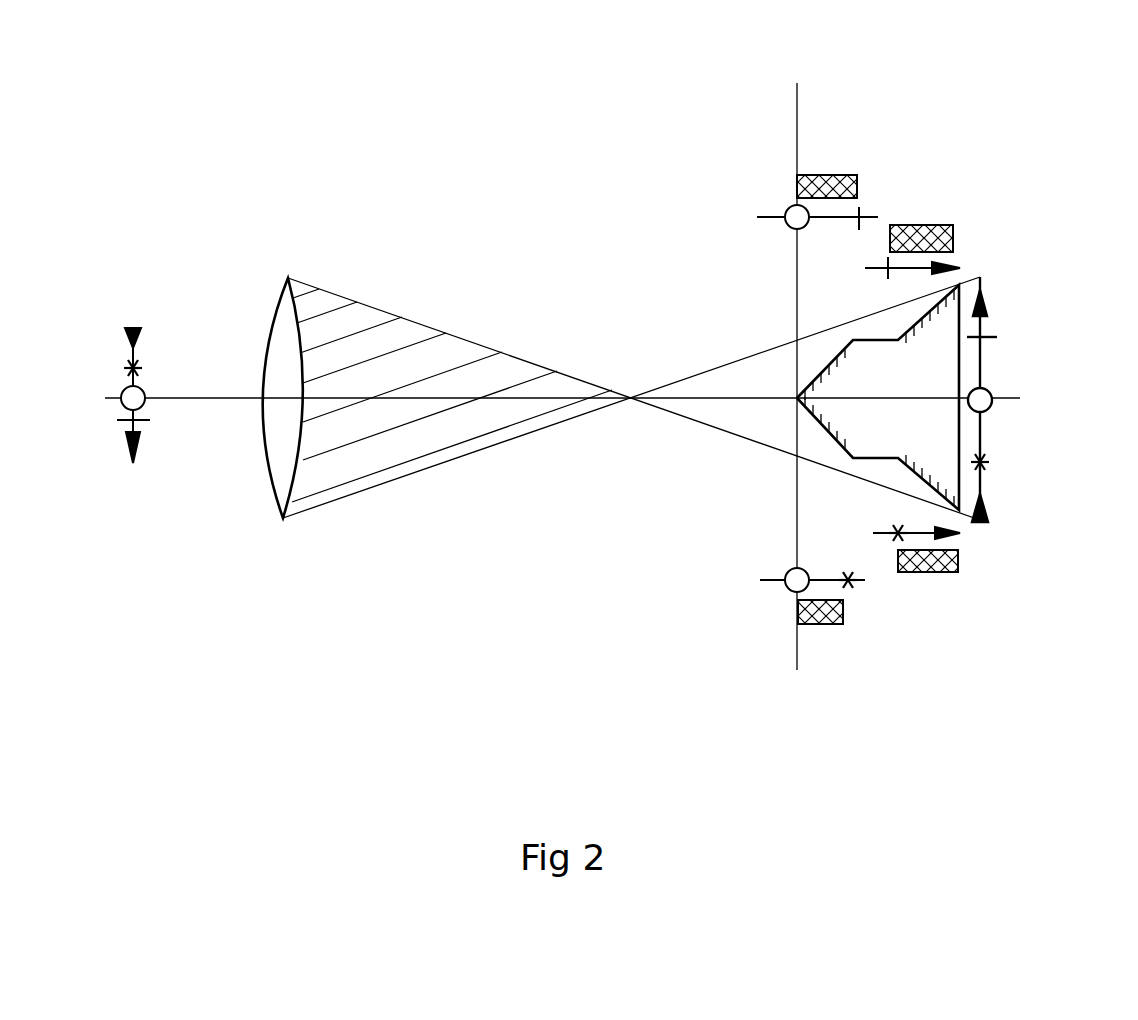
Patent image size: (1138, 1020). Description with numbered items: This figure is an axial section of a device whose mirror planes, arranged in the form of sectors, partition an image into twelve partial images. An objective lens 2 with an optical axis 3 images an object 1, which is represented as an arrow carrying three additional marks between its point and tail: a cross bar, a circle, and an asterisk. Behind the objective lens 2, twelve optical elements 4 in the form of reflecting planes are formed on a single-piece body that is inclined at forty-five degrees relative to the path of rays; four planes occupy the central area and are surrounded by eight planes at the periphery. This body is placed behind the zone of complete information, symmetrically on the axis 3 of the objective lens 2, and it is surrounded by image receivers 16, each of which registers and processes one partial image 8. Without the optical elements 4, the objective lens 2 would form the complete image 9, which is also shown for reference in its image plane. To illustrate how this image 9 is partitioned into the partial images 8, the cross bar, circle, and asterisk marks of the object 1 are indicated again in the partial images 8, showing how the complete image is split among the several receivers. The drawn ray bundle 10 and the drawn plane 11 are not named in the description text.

The object 1 is at (133, 455).
The objective lens 2 is at (288, 348).
The optical axis 3 is at (227, 400).
The optical elements 4 is at (820, 370).
The partial image 8 is at (767, 217).
The image 9 is at (983, 325).
The light rays 10 is at (440, 327).
The plane 11 is at (795, 288).
The image receivers 16 is at (827, 175).